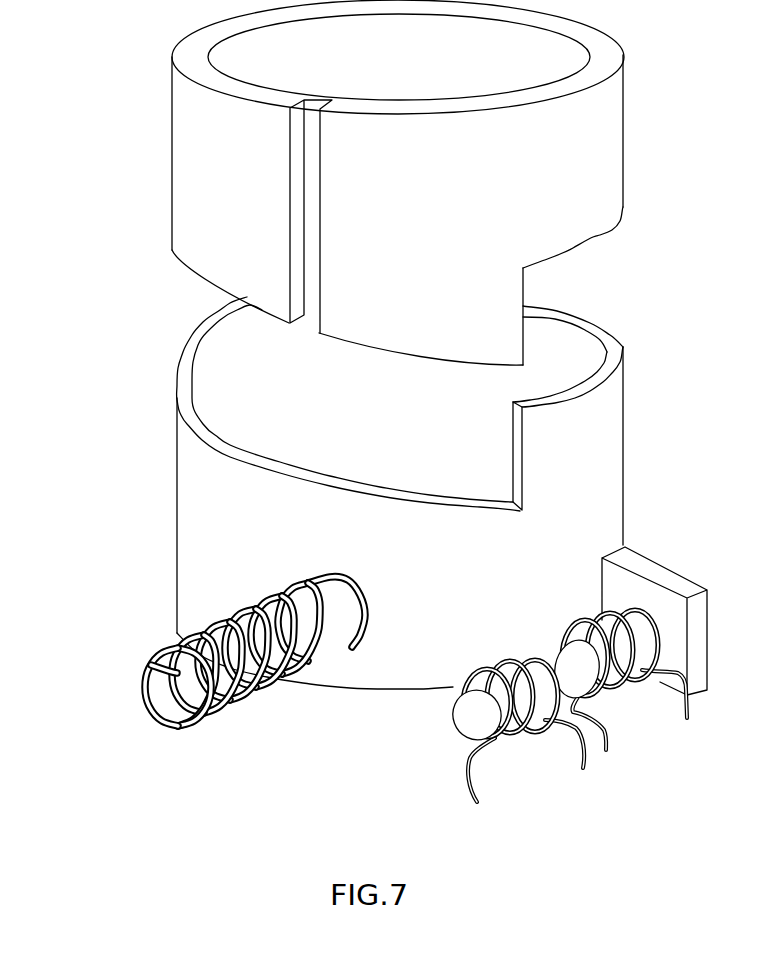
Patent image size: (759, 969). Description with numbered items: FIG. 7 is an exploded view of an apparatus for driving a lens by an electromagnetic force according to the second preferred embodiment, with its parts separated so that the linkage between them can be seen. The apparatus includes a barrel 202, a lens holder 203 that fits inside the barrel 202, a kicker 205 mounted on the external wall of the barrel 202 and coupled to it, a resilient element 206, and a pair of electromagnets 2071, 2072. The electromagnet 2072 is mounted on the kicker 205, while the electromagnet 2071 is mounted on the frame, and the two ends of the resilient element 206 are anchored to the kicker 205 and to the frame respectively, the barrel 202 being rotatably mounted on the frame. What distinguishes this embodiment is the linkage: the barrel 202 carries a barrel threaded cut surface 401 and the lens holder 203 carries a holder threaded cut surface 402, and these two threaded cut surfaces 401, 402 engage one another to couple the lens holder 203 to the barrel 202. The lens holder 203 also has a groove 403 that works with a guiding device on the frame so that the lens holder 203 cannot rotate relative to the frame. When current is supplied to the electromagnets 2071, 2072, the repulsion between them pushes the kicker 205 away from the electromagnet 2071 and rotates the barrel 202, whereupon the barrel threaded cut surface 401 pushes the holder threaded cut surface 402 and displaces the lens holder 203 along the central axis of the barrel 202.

The barrel 202 is at (443, 655).
The lens holder 203 is at (595, 190).
The kicker 205 is at (697, 590).
The resilient element 206 is at (147, 693).
The barrel threaded cut surface 401 is at (610, 349).
The holder threaded cut surface 402 is at (572, 249).
The groove 403 is at (298, 243).
The electromagnet 2071 is at (503, 733).
The electromagnet 2072 is at (603, 690).